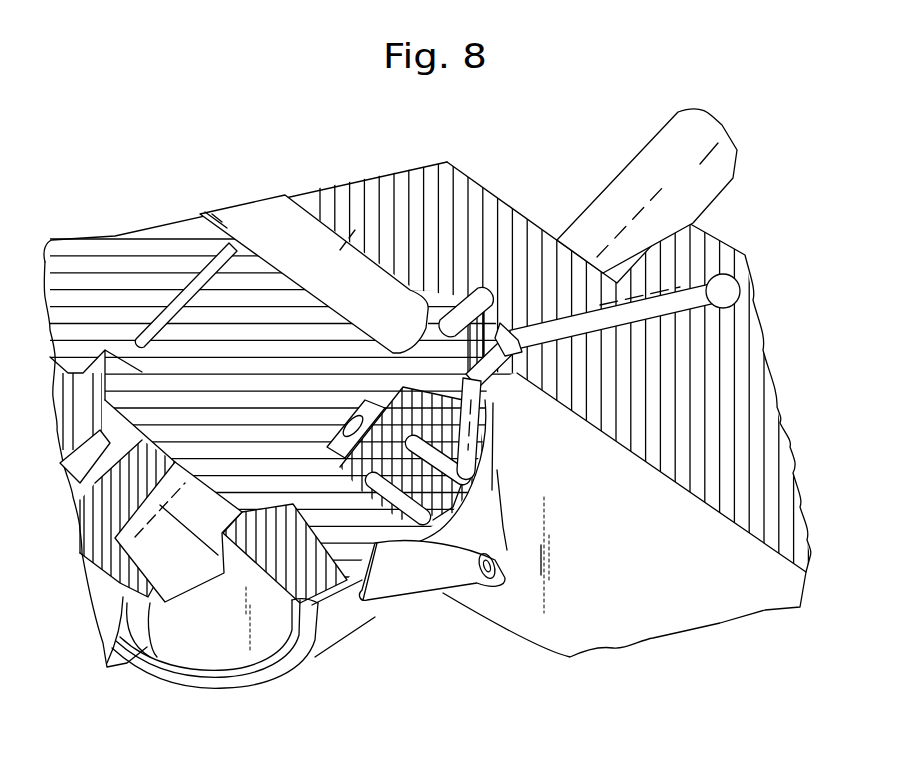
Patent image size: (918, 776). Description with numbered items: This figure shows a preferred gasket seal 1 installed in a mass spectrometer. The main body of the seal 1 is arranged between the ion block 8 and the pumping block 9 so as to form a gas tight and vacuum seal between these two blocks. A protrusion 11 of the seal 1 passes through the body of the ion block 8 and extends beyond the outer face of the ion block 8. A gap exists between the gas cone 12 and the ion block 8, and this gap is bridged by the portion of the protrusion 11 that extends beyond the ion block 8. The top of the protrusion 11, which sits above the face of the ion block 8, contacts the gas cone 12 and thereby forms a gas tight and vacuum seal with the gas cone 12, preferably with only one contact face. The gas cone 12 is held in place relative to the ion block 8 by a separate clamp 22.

The ion block 8 is at (120, 282).
The pumping block 9 is at (730, 468).
The seal 1 is at (528, 360).
The protrusion 11 is at (518, 375).
The gas cone 12 is at (424, 553).
The clamp 22 is at (210, 638).